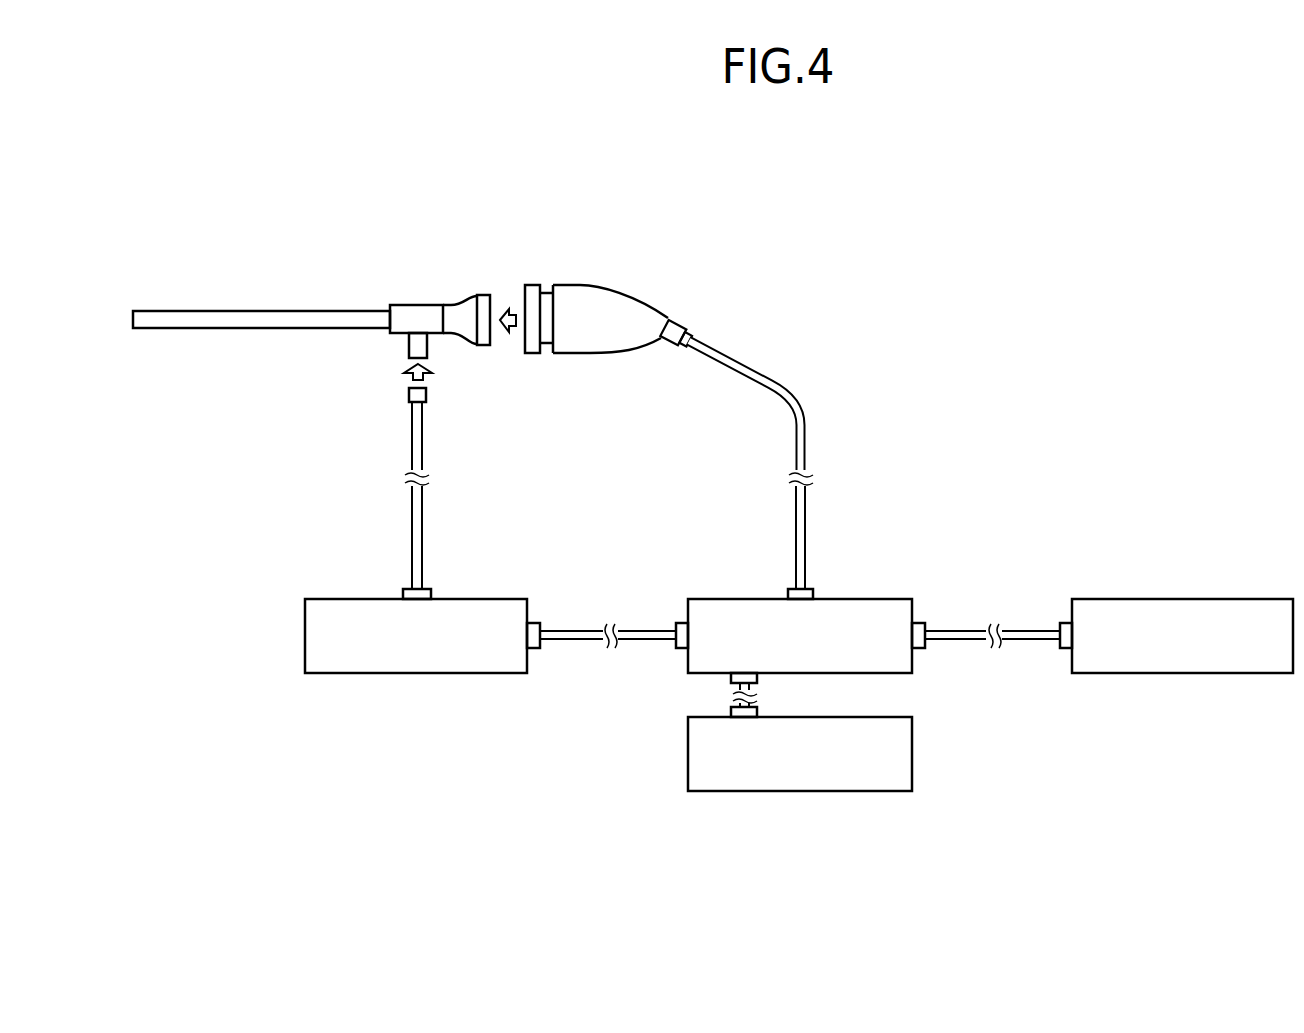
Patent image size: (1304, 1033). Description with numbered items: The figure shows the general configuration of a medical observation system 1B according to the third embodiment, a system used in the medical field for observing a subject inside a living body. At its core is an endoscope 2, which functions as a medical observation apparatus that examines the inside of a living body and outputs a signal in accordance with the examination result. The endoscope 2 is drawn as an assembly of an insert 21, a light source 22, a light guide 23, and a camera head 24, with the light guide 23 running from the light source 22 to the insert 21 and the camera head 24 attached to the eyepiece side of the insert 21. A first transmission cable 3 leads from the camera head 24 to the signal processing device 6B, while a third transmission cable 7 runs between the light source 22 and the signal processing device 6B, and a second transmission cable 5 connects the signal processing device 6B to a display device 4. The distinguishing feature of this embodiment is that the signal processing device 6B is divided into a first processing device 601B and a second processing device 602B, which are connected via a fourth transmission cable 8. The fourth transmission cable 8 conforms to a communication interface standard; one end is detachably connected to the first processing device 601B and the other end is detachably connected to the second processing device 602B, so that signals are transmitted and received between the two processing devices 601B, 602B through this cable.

The medical observation system 1B is at (918, 214).
The endoscope 2 is at (210, 766).
The insert 21 is at (240, 330).
The light source 22 is at (463, 673).
The light guide 23 is at (412, 513).
The camera head 24 is at (592, 340).
The first transmission cable 3 is at (808, 423).
The display device 4 is at (865, 716).
The second transmission cable 5 is at (735, 700).
The signal processing device 6B is at (1293, 528).
The first processing device 601B is at (890, 597).
The second processing device 602B is at (1212, 598).
The third transmission cable 7 is at (650, 631).
The fourth transmission cable 8 is at (1030, 631).